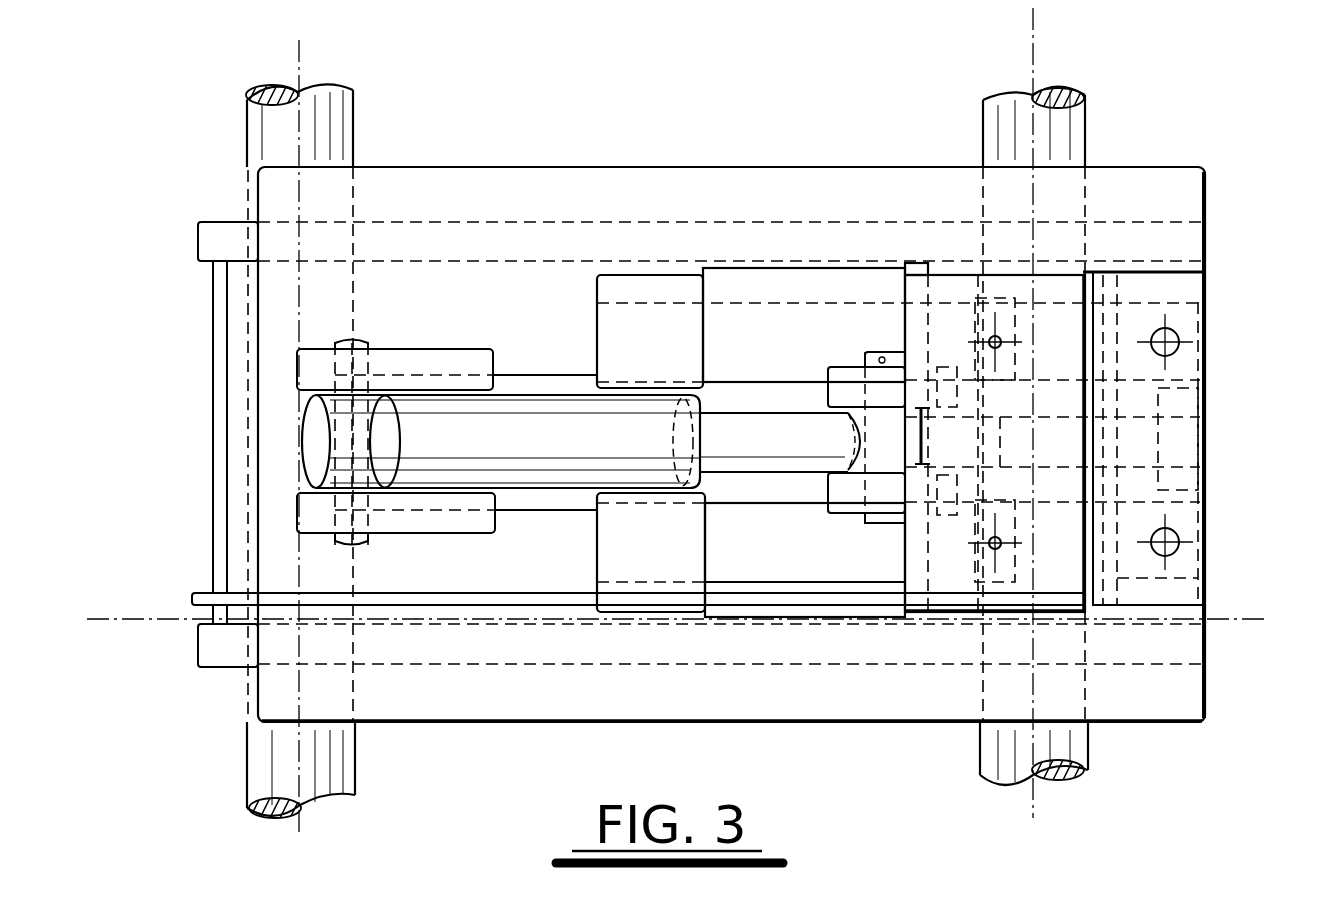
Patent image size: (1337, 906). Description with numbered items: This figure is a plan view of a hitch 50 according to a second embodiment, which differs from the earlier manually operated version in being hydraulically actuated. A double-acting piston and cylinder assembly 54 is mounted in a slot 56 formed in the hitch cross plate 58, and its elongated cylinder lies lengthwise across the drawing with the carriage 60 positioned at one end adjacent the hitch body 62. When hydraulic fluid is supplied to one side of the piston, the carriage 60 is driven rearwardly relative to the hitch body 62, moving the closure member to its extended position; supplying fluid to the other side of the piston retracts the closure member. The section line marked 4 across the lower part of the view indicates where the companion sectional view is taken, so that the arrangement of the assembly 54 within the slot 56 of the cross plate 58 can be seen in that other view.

The hitch 50 is at (1168, 126).
The double-acting piston and cylinder assembly 54 is at (595, 468).
The slot 56 is at (580, 380).
The hitch cross plate 58 is at (483, 312).
The carriage 60 is at (925, 265).
The hitch body 62 is at (720, 165).
The section line for FIG. 4 is at (1285, 556).